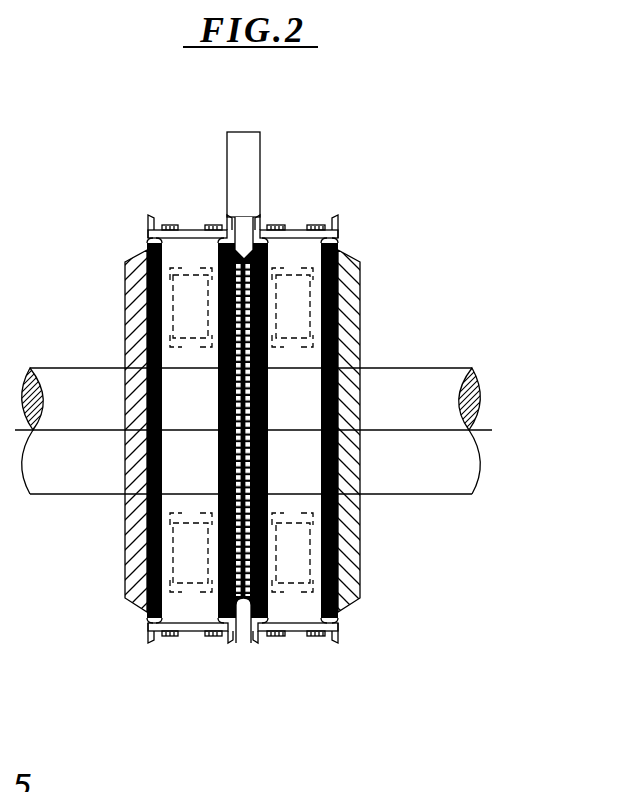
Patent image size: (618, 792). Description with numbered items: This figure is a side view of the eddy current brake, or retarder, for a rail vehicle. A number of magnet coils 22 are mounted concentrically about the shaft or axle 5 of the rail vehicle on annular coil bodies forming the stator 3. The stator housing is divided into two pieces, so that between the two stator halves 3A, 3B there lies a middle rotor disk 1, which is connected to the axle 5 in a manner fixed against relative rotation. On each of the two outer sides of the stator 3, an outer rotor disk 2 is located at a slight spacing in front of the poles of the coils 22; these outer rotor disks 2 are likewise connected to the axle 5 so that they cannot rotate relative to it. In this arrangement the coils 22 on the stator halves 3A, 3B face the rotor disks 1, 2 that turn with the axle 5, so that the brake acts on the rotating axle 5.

The middle rotor disk 1 is at (243, 132).
The outer rotor disk 2 is at (127, 290).
The magnet coils 22 is at (192, 285).
The stator 3 is at (205, 598).
The stator half 3A is at (185, 607).
The stator half 3B is at (297, 605).
The axle 5 is at (382, 388).